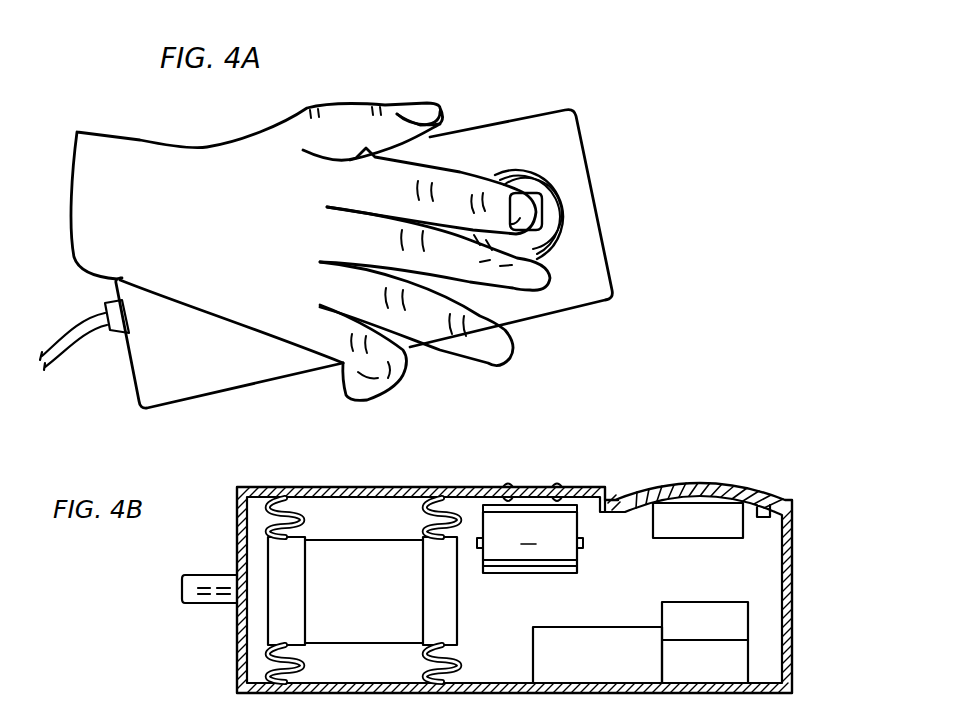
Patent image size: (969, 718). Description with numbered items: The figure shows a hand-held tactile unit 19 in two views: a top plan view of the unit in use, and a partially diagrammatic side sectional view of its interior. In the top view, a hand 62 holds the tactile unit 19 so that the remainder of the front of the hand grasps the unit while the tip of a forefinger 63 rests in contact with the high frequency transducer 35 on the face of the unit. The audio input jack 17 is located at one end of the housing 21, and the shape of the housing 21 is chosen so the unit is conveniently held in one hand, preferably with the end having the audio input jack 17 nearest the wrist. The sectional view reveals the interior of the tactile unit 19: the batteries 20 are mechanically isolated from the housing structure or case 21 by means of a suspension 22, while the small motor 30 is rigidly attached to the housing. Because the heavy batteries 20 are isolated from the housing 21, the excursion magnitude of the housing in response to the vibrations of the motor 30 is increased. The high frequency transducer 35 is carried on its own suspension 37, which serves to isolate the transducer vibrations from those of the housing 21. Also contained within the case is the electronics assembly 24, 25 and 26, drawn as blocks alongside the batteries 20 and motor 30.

In FIG. 4A, the tactile unit 19 is at (482, 126).
In FIG. 4B, the tactile unit 19 is at (537, 540).
In FIG. 4A, the hand 62 is at (268, 232).
In FIG. 4A, the forefinger 63 is at (533, 208).
In FIG. 4A, the high frequency transducer 35 is at (563, 236).
In FIG. 4B, the high frequency transducer 35 is at (689, 533).
In FIG. 4B, the audio input jack 17 is at (205, 575).
In FIG. 4B, the batteries 20 is at (380, 633).
In FIG. 4B, the suspension 22 is at (273, 657).
In FIG. 4B, the small motor 30 is at (560, 522).
In FIG. 4B, the suspension 37 is at (728, 434).
In FIG. 4B, the housing 21 is at (793, 590).
In FIG. 4B, the electronics assembly 24 is at (579, 670).
In FIG. 4B, the electronics assembly 25 is at (704, 675).
In FIG. 4B, the electronics assembly 26 is at (704, 633).